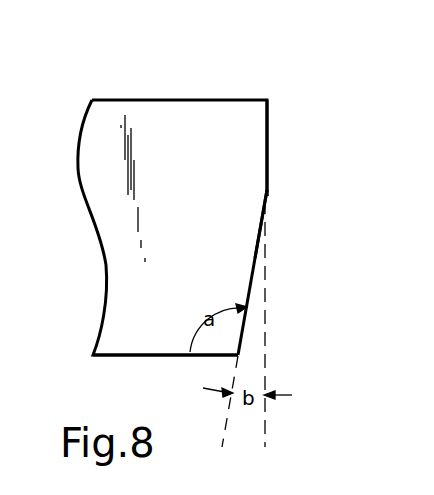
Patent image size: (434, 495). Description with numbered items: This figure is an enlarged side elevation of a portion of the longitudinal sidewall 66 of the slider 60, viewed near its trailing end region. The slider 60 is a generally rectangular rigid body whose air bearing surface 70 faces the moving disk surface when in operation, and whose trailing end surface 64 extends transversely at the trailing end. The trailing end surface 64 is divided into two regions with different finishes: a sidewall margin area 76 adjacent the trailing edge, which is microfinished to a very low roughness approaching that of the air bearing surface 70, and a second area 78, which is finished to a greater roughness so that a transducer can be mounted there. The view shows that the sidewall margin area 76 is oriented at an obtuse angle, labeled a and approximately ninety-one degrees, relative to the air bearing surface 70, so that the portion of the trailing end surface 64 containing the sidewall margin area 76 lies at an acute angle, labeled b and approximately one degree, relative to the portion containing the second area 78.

The slider 60 is at (157, 90).
The trailing end surface 64 is at (268, 153).
The longitudinally extending sidewall surface 66 is at (191, 224).
The air bearing surface 70 is at (155, 358).
The sidewall margin area 76 is at (252, 285).
The second area 78 is at (263, 217).